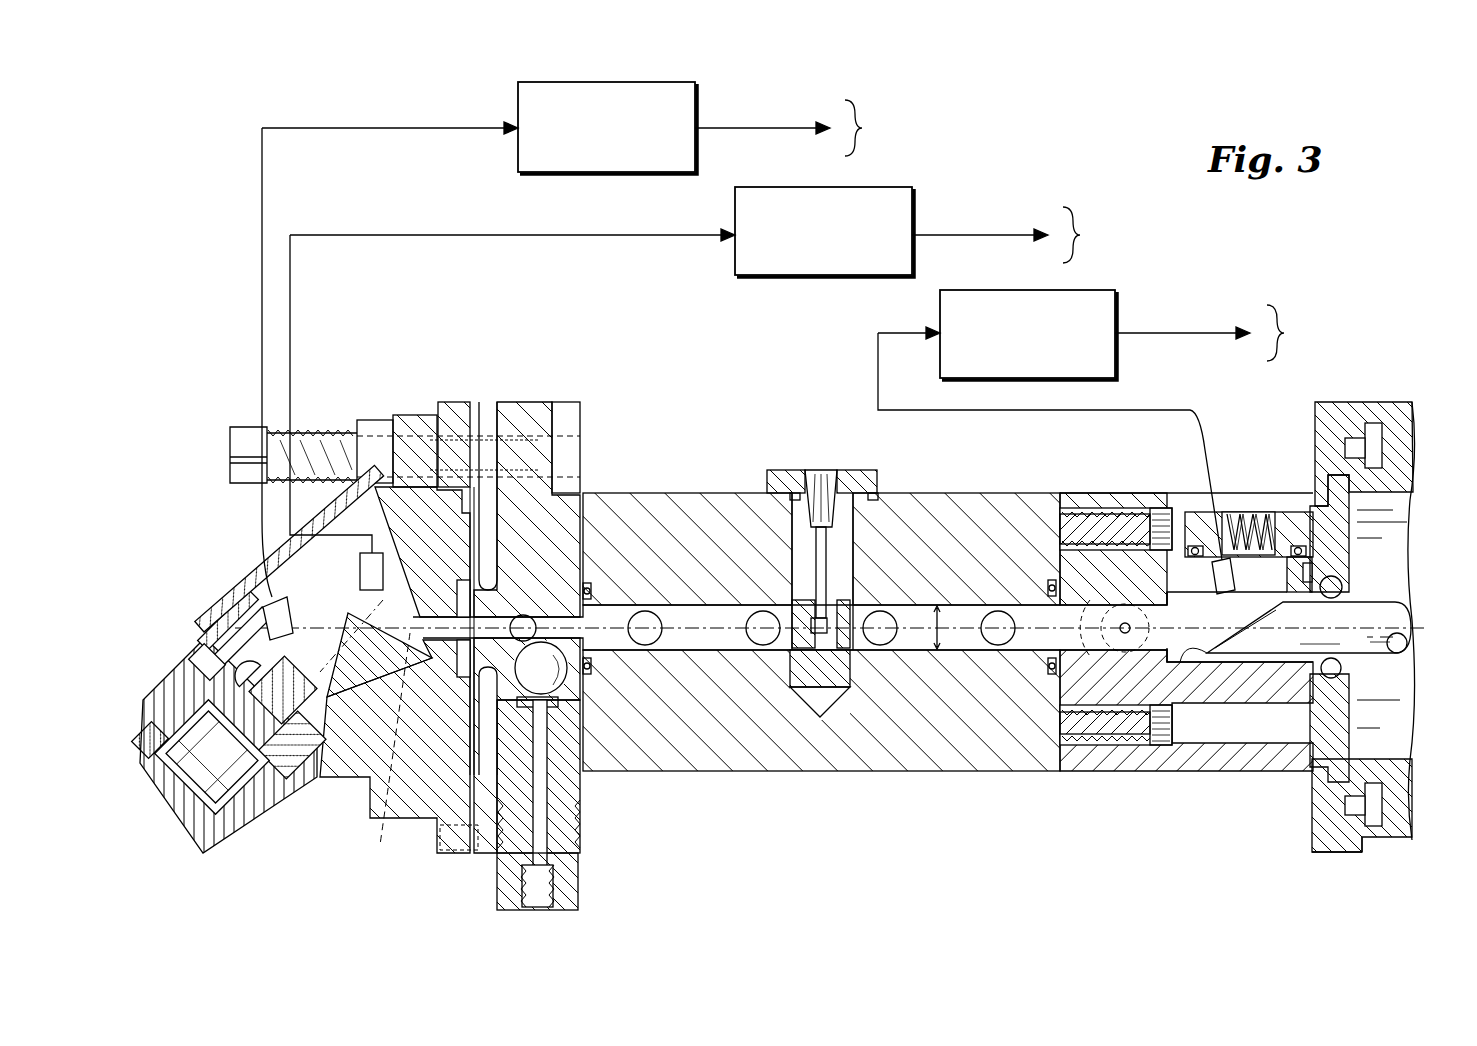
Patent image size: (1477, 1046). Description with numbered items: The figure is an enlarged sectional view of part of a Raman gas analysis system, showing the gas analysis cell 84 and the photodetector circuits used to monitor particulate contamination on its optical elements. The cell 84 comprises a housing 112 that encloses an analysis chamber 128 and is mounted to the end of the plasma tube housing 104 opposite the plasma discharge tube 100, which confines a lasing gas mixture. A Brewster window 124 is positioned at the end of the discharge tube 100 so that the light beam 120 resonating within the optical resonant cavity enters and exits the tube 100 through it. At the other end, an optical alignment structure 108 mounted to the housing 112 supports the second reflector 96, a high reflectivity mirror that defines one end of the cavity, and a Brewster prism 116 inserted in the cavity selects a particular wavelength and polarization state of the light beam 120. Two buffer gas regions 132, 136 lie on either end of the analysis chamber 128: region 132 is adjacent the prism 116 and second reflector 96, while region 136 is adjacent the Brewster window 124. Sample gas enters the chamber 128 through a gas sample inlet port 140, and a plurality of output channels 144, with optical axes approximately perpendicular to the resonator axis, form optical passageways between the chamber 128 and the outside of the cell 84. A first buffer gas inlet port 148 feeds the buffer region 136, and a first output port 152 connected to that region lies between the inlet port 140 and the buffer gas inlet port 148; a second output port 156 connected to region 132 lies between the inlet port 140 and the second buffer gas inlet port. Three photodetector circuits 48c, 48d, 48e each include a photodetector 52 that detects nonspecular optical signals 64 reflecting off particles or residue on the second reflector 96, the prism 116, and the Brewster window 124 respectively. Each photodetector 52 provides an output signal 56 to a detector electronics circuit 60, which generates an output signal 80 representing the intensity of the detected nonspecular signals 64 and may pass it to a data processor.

The output signal 56 is at (262, 170).
The detector electronics circuit 60 is at (655, 82).
The output signal 80 is at (740, 128).
The photodetector circuit 48c is at (879, 128).
The photodetector circuit 48d is at (1099, 235).
The photodetector circuit 48e is at (1302, 333).
The gas analysis cell 84 is at (725, 386).
The housing 112 is at (648, 493).
The light beam 120 is at (717, 630).
The gas sample inlet port 140 is at (826, 478).
The analysis chamber 128 is at (968, 615).
The first buffer gas inlet port 148 is at (1237, 520).
The photodetector 52 is at (360, 580).
The plasma discharge tube 100 is at (1390, 532).
The nonspecular optical signals 64 is at (370, 603).
The buffer gas region 132 is at (252, 616).
The second reflector 96 is at (235, 688).
The Brewster prism 116 is at (353, 678).
The optical alignment structure 108 is at (393, 877).
The second output port 156 is at (560, 657).
The output channels 144 is at (757, 638).
The first output port 152 is at (1122, 633).
The buffer gas region 136 is at (1173, 652).
The Brewster window 124 is at (1170, 657).
The plasma tube housing 104 is at (1388, 843).